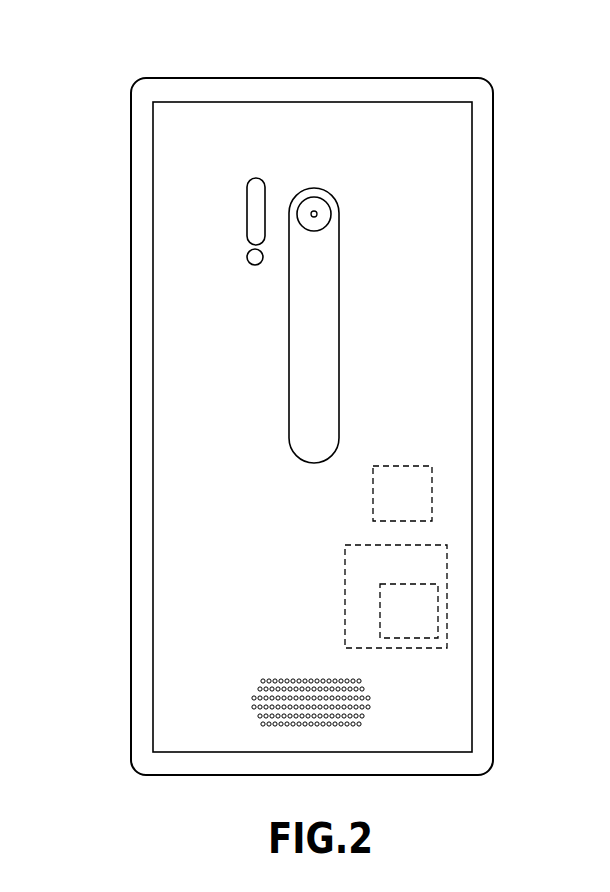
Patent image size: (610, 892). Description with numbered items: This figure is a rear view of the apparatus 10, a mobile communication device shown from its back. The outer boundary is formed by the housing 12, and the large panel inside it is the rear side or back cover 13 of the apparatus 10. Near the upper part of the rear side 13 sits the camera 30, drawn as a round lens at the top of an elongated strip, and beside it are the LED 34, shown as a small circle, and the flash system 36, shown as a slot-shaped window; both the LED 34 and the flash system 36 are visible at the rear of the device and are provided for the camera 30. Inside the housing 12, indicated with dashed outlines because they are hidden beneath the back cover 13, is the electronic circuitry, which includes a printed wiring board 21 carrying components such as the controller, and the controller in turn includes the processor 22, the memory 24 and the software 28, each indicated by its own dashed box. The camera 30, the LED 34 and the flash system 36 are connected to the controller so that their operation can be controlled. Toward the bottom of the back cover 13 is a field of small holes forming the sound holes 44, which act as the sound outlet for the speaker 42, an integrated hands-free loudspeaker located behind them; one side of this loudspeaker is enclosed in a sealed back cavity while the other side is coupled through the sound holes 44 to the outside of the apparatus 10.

The apparatus 10 is at (527, 146).
The housing 12 is at (480, 323).
The rear side 13 is at (456, 410).
The printed wiring board 21 is at (443, 525).
The processor 22 is at (432, 488).
The memory 24 is at (447, 557).
The software 28 is at (428, 613).
The camera 30 is at (318, 212).
The LED 34 is at (246, 259).
The flash system 36 is at (253, 222).
The speaker 42 is at (343, 710).
The sound holes 44 is at (260, 707).